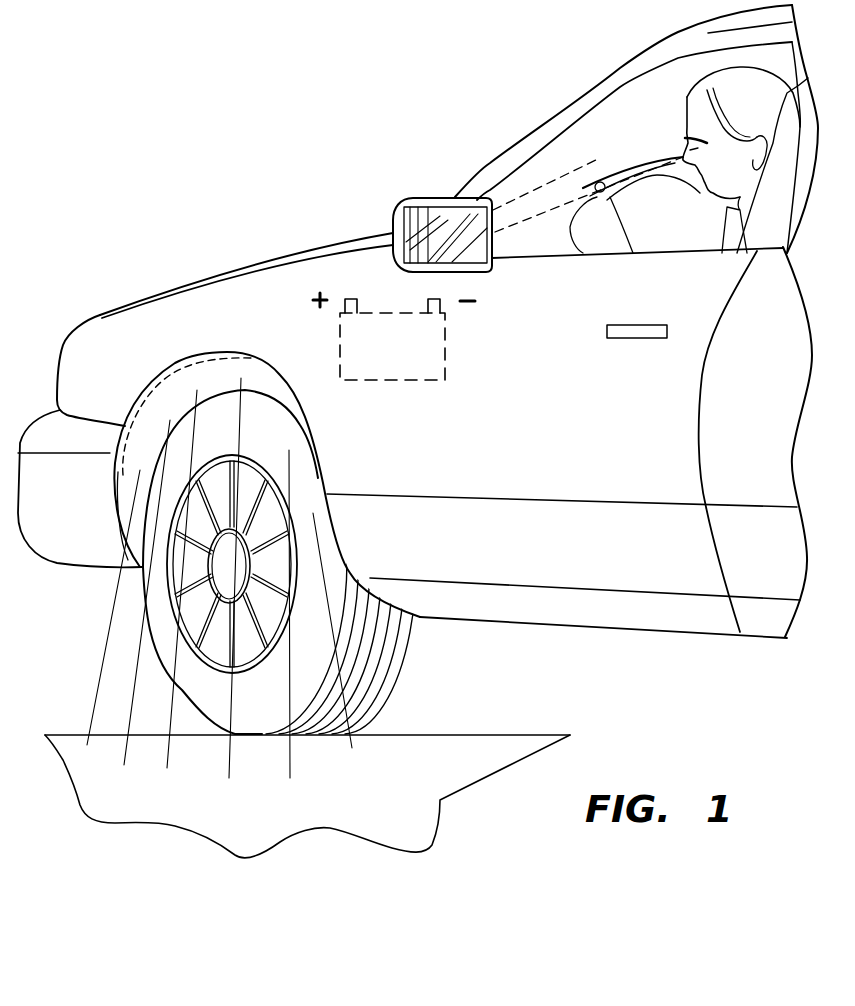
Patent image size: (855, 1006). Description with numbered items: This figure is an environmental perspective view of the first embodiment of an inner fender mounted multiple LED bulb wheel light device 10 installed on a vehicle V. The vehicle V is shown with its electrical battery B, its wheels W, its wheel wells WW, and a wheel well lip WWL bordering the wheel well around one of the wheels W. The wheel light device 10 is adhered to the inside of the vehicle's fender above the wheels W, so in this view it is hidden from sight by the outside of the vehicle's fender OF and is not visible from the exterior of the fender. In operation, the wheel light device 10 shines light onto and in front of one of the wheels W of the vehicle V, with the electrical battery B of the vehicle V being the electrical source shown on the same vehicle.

The wheel light device 10 is at (127, 412).
The vehicle V is at (549, 410).
The wheels W is at (167, 642).
The wheel wells WW is at (213, 377).
The wheel well lip WWL is at (118, 528).
The outside of the vehicle's fender OF is at (248, 290).
The electrical battery B is at (377, 312).